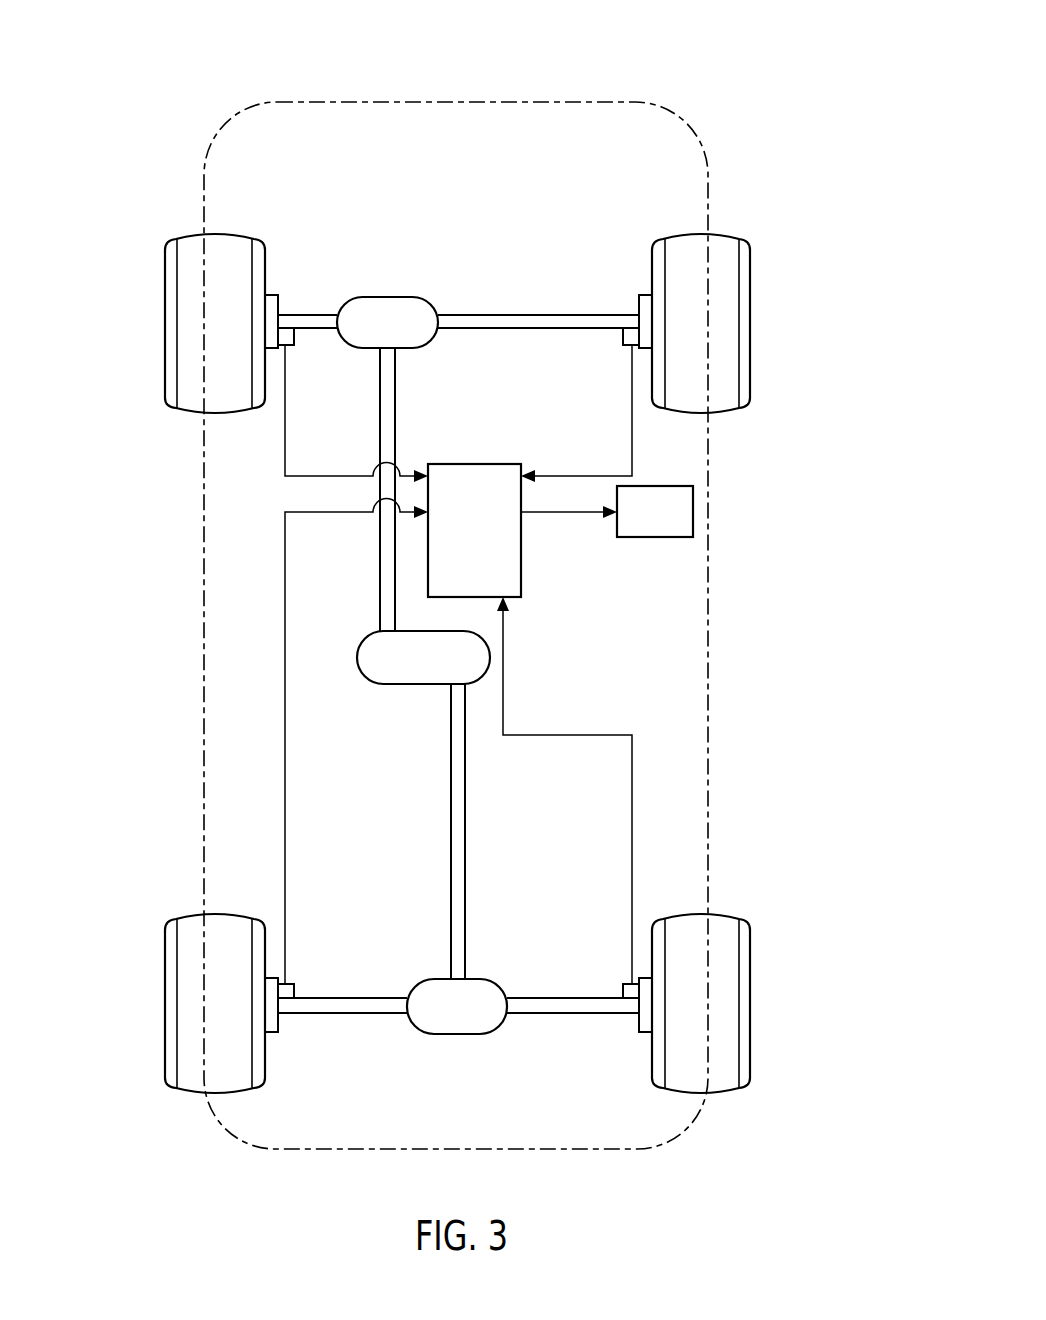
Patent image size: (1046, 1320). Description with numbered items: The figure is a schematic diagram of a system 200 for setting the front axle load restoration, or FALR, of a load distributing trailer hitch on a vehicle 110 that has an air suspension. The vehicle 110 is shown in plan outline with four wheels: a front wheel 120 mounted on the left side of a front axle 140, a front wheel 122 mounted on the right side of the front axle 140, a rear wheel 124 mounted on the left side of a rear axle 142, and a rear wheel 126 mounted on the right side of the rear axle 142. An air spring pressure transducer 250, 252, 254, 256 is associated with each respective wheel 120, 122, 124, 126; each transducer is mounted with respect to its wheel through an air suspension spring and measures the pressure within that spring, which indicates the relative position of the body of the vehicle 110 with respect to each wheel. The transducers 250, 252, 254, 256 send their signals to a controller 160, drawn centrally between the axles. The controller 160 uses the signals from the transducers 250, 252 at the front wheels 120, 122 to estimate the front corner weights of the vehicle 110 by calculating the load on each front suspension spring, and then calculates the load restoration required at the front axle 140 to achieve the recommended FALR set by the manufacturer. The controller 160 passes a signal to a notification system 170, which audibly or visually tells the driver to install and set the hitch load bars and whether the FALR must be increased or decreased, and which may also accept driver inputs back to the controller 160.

The system 200 is at (150, 60).
The vehicle 110 is at (564, 93).
The front wheel 120 is at (188, 236).
The front wheel 122 is at (725, 236).
The rear wheel 124 is at (192, 918).
The rear wheel 126 is at (718, 919).
The front axle 140 is at (313, 315).
The rear axle 142 is at (333, 1015).
The controller 160 is at (490, 545).
The notification system 170 is at (672, 532).
The air spring pressure transducer 250 is at (297, 335).
The air spring pressure transducer 252 is at (620, 340).
The air spring pressure transducer 254 is at (295, 992).
The air spring pressure transducer 256 is at (623, 993).